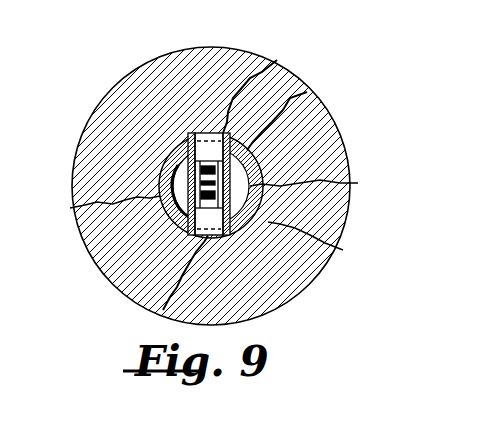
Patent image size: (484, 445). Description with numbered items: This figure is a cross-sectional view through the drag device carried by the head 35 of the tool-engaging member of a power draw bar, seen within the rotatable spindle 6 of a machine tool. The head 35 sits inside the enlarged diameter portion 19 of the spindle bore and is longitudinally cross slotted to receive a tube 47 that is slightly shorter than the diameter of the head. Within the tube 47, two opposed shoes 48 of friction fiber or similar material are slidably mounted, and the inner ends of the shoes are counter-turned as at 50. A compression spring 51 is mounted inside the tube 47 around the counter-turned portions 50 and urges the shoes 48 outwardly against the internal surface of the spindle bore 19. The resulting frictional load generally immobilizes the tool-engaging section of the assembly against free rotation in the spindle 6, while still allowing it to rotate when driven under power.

The rotatable spindle 6 is at (98, 105).
The enlarged diameter portion 19 is at (103, 209).
The head 35 is at (307, 92).
The tube 47 is at (316, 242).
The shoes 48 is at (277, 60).
The counter-turned portions 50 is at (248, 222).
The compression spring 51 is at (315, 184).